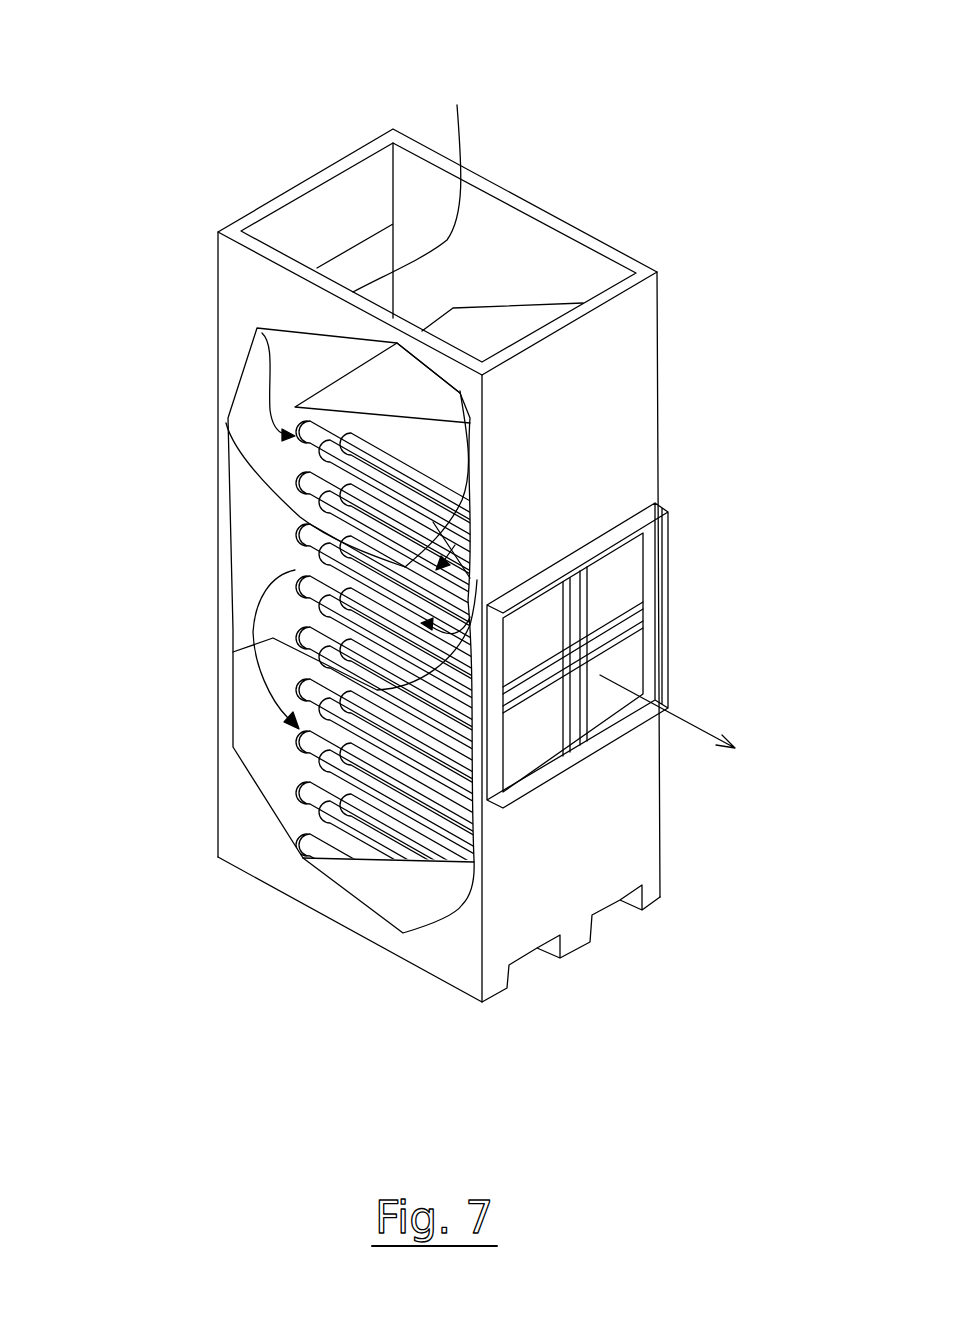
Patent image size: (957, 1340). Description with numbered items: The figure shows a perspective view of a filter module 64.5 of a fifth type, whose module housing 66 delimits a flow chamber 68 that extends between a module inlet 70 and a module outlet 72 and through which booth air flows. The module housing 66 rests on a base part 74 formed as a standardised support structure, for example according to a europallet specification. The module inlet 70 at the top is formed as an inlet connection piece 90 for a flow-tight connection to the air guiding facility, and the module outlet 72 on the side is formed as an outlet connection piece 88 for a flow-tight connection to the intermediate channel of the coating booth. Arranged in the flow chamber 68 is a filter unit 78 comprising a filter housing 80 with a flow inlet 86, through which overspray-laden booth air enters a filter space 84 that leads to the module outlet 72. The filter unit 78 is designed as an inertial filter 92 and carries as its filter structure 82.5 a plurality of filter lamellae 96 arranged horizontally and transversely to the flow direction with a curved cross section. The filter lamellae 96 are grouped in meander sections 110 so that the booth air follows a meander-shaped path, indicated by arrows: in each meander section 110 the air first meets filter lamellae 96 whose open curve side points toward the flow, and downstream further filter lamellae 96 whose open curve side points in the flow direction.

The module inlet 70 is at (300, 185).
The inlet connection piece 90 is at (342, 166).
The flow inlet 86 is at (452, 310).
The filter module 64.5 is at (583, 240).
The module housing 66 is at (637, 338).
The filter lamellae 96 is at (468, 495).
The meander sections 110 is at (457, 461).
The filter unit 78 is at (467, 492).
The filter housing 80 is at (462, 503).
The module outlet 72 is at (630, 573).
The outlet connection piece 88 is at (671, 591).
The inertial filter 92 is at (238, 464).
The flow chamber 68 is at (243, 500).
The filter structure 82.5 is at (282, 546).
The base part 74 is at (323, 902).
The filter space 84 is at (430, 830).